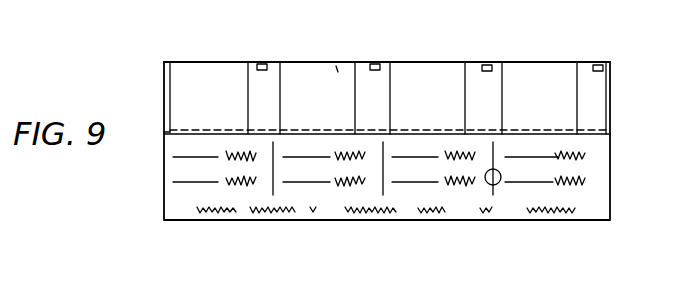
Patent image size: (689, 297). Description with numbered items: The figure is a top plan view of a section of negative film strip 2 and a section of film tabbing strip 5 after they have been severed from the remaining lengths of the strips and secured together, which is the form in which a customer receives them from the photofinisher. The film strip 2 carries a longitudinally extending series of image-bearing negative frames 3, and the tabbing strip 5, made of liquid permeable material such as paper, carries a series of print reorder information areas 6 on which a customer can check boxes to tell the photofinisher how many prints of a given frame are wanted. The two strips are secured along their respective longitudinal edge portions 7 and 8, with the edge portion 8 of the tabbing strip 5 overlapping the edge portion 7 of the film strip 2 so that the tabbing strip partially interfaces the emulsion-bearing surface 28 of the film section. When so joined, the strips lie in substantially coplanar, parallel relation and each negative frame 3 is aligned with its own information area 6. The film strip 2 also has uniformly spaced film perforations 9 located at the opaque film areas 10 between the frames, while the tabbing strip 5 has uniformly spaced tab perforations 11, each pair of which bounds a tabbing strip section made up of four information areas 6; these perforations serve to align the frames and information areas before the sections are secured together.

The negative film strip 2 is at (410, 64).
The image-bearing frames 3 is at (222, 82).
The film tabbing strip 5 is at (598, 205).
The print reorder information areas 6 is at (328, 194).
The longitudinal edge portion of the film strip 7 is at (178, 136).
The longitudinal edge portion of the tabbing strip 8 is at (172, 132).
The film perforations 9 is at (264, 63).
The opaque film areas 10 is at (362, 98).
The tab perforations 11 is at (498, 183).
The emulsion-bearing surface 28 is at (338, 72).